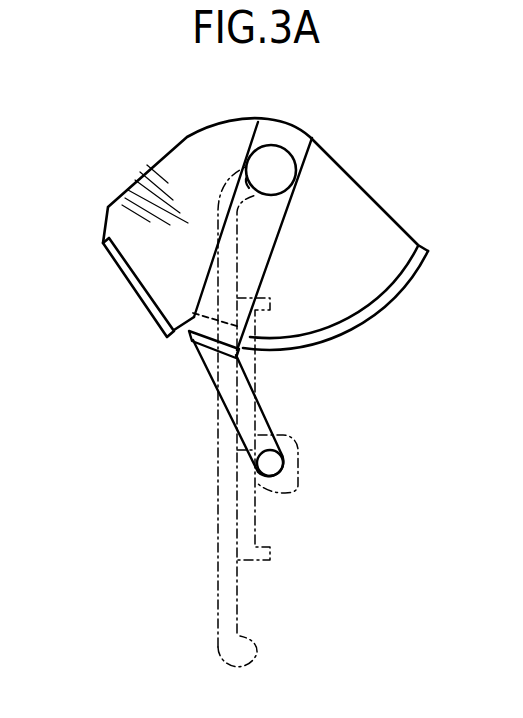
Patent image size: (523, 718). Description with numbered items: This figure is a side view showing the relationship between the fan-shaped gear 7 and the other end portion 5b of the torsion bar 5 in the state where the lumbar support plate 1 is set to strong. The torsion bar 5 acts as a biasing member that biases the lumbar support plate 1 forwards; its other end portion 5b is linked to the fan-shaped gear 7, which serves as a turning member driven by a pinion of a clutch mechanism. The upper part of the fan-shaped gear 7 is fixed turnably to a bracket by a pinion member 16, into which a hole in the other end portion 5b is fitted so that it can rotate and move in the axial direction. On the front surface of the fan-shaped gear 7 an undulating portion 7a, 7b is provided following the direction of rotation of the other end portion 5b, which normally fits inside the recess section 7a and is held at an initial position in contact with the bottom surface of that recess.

The lumbar support plate 1 is at (217, 610).
The torsion bar 5 is at (273, 465).
The other end portion of the torsion bar 5b is at (203, 287).
The fan-shaped gear 7 is at (360, 198).
The recess section 7a is at (193, 320).
The undulating portion 7b is at (108, 265).
The pinion member 16 is at (282, 146).